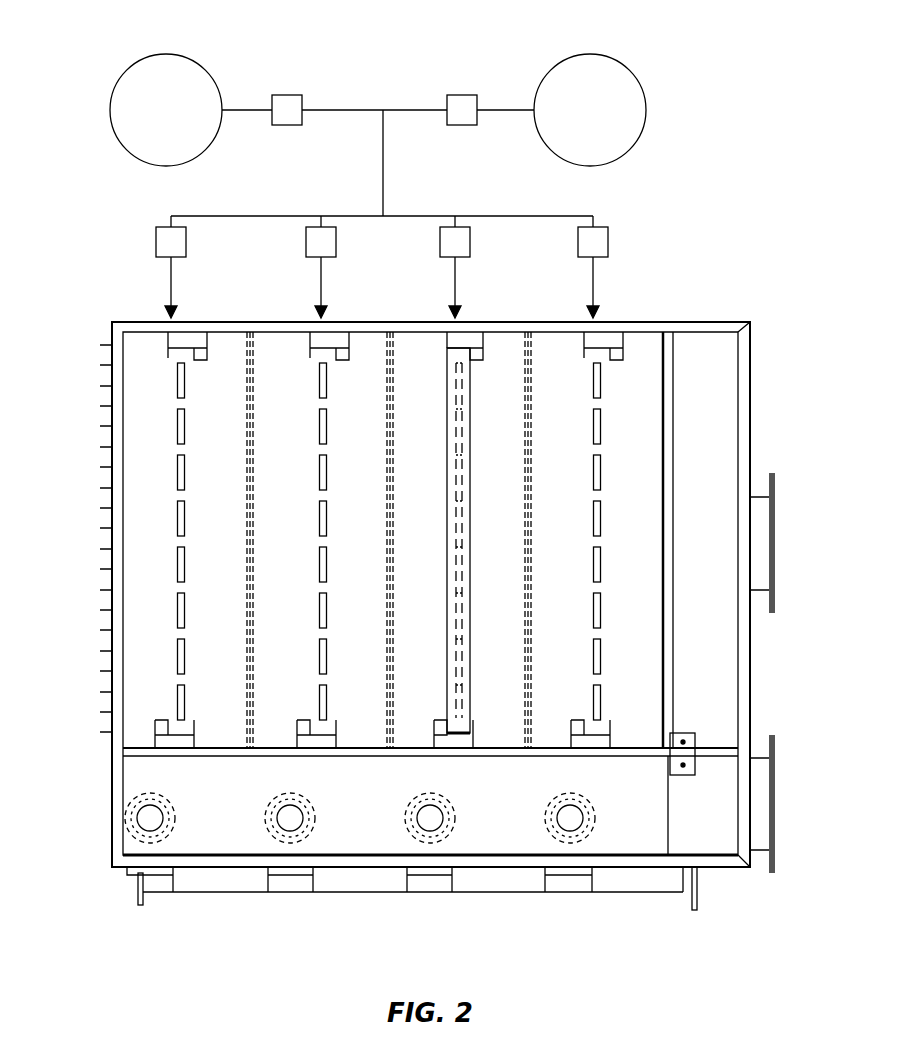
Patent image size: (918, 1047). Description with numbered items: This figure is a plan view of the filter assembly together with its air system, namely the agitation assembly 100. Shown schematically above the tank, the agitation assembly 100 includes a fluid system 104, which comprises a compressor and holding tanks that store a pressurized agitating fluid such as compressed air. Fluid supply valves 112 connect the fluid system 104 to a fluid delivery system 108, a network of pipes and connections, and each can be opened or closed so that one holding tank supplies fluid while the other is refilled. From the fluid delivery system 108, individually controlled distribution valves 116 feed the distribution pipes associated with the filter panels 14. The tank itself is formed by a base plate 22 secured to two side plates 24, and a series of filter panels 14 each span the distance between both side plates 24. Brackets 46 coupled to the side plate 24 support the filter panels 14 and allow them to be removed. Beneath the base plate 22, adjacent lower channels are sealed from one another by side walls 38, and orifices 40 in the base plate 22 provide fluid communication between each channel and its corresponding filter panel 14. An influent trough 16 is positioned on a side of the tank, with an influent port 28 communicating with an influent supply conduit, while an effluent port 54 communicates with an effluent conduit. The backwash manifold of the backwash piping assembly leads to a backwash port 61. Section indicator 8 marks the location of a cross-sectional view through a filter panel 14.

The agitation assembly 100 is at (98, 44).
The fluid system 104 is at (172, 76).
The fluid delivery system 108 is at (355, 108).
The fluid supply valves 112 is at (284, 100).
The distribution valves 116 is at (165, 240).
The base plate 22 is at (125, 403).
The side plates 24 is at (566, 322).
The brackets 46 is at (181, 336).
The side walls 38 is at (258, 372).
The orifices 40 is at (600, 663).
The filter panels 14 is at (465, 402).
The section line 8- 8 is at (488, 607).
The effluent port 54 is at (775, 556).
The influent port 28 is at (775, 808).
The influent trough 16 is at (135, 830).
The backwash port 61 is at (697, 900).